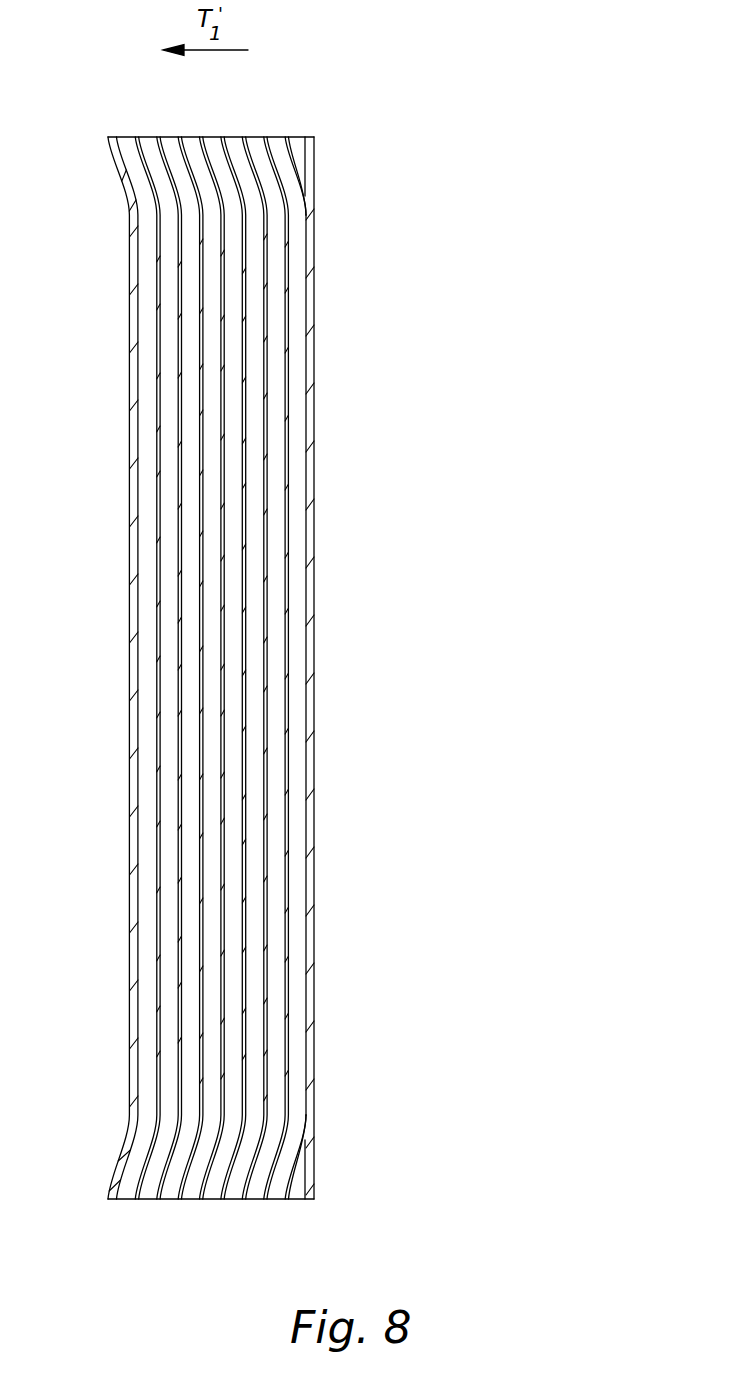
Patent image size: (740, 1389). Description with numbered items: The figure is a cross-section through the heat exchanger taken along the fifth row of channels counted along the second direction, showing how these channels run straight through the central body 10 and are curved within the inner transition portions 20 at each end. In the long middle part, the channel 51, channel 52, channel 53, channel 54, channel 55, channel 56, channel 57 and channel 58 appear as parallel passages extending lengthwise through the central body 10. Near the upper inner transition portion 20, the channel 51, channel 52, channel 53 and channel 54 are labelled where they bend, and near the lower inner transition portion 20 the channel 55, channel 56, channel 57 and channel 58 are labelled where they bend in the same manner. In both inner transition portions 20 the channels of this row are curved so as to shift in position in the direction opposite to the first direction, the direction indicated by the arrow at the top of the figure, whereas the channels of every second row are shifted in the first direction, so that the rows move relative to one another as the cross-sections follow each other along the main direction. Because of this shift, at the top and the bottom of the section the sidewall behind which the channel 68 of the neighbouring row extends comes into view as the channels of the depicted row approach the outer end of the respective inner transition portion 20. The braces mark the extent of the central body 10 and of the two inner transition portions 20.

The central body 10 is at (340, 203).
The inner transition portion 20 is at (319, 138).
The channel A51 51 is at (127, 145).
The channel B52 52 is at (147, 145).
The channel A53 53 is at (170, 152).
The channel B54 54 is at (190, 155).
The channel A55 55 is at (212, 1186).
The channel B56 56 is at (233, 1192).
The channel A57 57 is at (253, 1192).
The channel B58 58 is at (277, 1195).
The channel A68 68 is at (383, 1218).